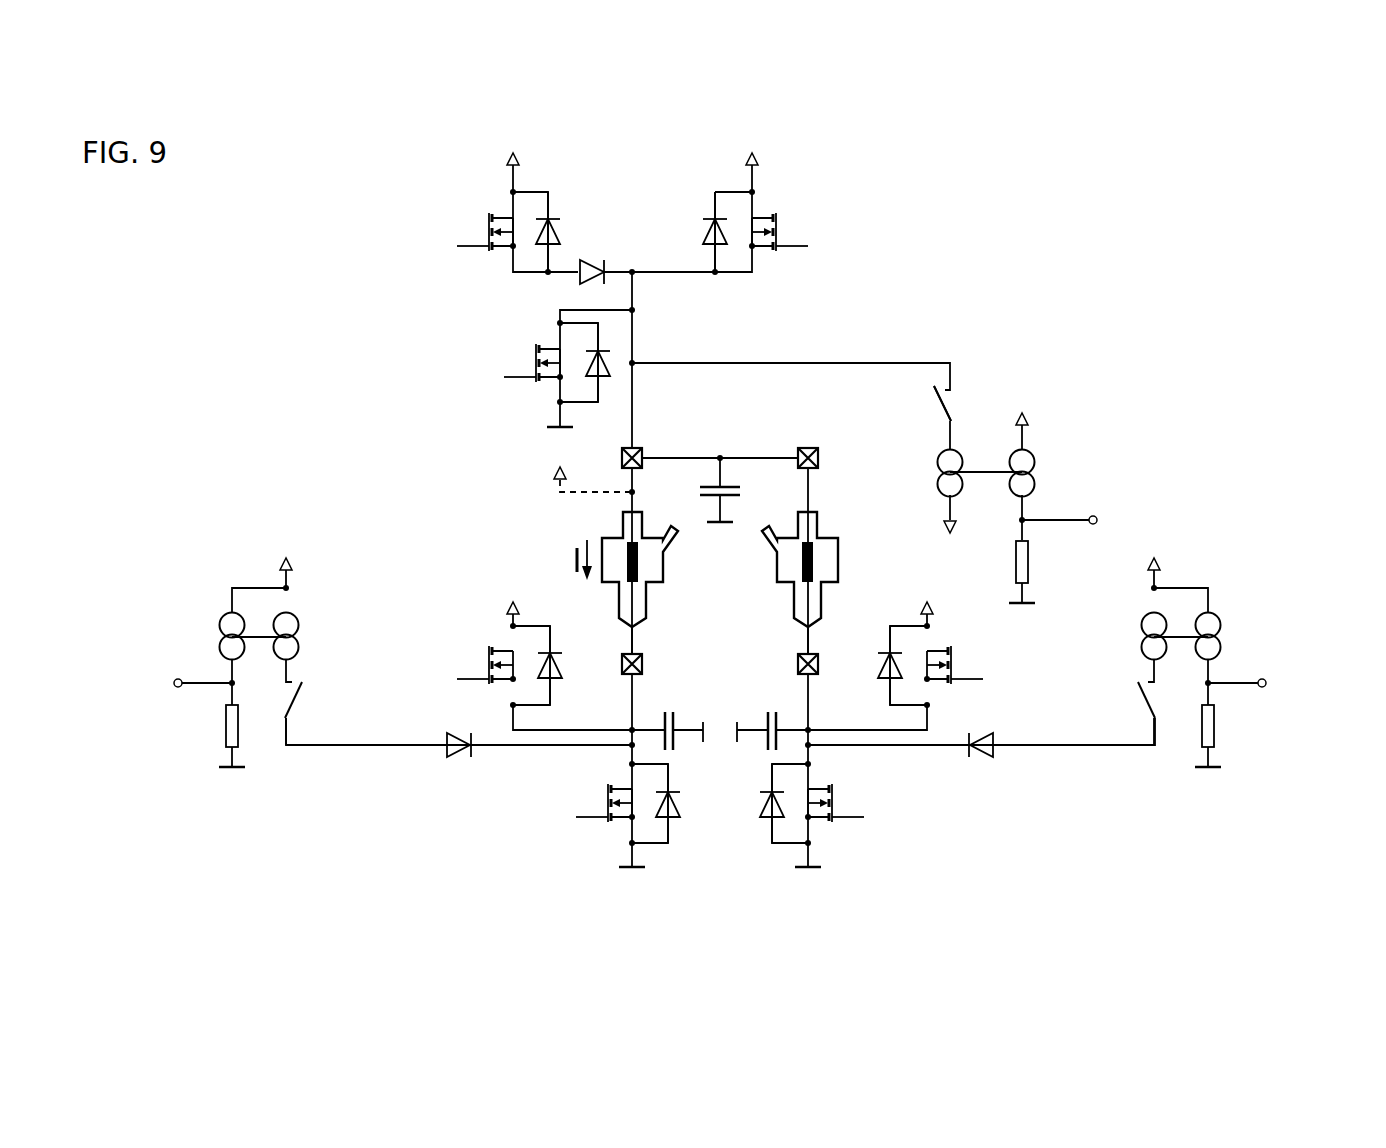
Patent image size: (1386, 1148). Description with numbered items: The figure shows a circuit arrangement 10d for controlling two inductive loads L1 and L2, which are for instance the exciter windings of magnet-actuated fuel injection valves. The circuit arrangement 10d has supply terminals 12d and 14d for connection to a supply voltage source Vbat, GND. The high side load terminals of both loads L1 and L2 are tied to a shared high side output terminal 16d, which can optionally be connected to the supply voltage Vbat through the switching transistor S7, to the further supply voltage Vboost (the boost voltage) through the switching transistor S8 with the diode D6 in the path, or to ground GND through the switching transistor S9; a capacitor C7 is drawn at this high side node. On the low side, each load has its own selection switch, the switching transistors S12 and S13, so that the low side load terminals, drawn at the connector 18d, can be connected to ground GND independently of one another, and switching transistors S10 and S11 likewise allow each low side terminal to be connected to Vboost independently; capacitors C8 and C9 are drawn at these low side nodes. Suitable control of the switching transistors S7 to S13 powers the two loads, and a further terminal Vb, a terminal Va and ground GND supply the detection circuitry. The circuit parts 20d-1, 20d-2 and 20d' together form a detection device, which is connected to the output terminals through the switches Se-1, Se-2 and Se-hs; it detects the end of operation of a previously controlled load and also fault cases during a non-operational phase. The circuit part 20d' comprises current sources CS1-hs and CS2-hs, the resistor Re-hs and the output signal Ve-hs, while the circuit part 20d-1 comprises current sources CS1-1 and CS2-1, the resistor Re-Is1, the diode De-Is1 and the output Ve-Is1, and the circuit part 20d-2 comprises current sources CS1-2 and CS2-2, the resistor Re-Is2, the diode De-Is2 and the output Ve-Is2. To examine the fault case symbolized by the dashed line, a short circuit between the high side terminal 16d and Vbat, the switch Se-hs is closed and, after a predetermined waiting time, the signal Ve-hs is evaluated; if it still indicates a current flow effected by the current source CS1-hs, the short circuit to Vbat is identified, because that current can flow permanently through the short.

The circuit arrangement 10d is at (908, 204).
The supply terminal 12d is at (512, 178).
The supply terminal 14d is at (631, 856).
The shared high side output terminal 16d is at (637, 446).
The low-side connector 18d is at (644, 665).
The circuit part 20d' is at (1047, 473).
The circuit part 20d-1 is at (226, 546).
The circuit part 20d-2 is at (1214, 546).
The switching transistor S7 is at (486, 228).
The switching transistor S8 is at (779, 228).
The switching transistor S9 is at (532, 358).
The switching transistor S10 is at (487, 662).
The switching transistor S11 is at (955, 662).
The switching transistor S12 is at (605, 800).
The switching transistor S13 is at (837, 800).
The diode D6 is at (601, 262).
The capacitor C7 is at (700, 491).
The capacitor C8 is at (666, 752).
The capacitor C9 is at (770, 708).
The inductive load L1 is at (664, 560).
The inductive load L2 is at (840, 560).
The supply voltage Vbat is at (560, 457).
The further supply voltage Vboost is at (721, 376).
The bias voltage Vb is at (1021, 404).
The supply voltage Va is at (720, 549).
The ground GND is at (793, 700).
The switch Se-hs is at (932, 404).
The current source CS1-hs is at (937, 482).
The high-side second current source CS2-hs is at (1035, 462).
The signal Ve-hs is at (1094, 504).
The high-side sense resistor Re-hs is at (1029, 563).
The first current source of first low-side sensing circuit CS1-1 is at (299, 646).
The second current source of first low-side sensing circuit CS2-1 is at (219, 629).
The switch Se-1 is at (301, 700).
The first sense output Ve-Is1 is at (146, 684).
The first sense resistor Re-Is1 is at (226, 728).
The first sense diode De-Is1 is at (458, 760).
The first current source of second low-side sensing circuit CS1-2 is at (1141, 646).
The second current source of second low-side sensing circuit CS2-2 is at (1221, 629).
The second enable switch Se-2 is at (1146, 700).
The second sense output Ve-Is2 is at (1297, 688).
The second sense resistor Re-Is2 is at (1214, 728).
The second sense diode De-Is2 is at (975, 760).